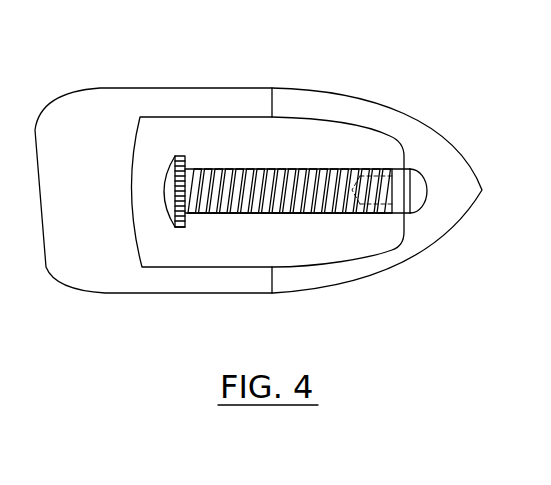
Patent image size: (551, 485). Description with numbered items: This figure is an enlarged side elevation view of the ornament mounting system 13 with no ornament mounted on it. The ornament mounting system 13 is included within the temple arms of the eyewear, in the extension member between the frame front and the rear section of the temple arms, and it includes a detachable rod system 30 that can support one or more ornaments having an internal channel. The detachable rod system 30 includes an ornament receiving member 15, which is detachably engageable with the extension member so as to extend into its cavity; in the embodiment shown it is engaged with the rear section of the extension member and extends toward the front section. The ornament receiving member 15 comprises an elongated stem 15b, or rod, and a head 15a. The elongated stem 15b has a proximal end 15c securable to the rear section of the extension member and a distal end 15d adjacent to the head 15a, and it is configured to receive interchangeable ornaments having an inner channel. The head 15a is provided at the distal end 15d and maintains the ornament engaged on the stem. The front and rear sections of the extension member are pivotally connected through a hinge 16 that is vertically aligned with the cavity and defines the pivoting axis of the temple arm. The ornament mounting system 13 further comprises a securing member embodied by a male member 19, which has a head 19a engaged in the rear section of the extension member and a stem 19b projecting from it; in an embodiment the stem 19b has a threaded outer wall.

The ornament mounting system 13 is at (400, 305).
The ornament receiving member 15 is at (337, 196).
The head 15a is at (173, 173).
The elongated stem 15b is at (342, 170).
The proximal end 15c is at (389, 160).
The distal end 15d is at (190, 240).
The hinge 16 is at (272, 292).
The male member 19 is at (425, 175).
The head 19a is at (412, 197).
The stem 19b is at (360, 200).
The detachable rod system 30 is at (340, 238).